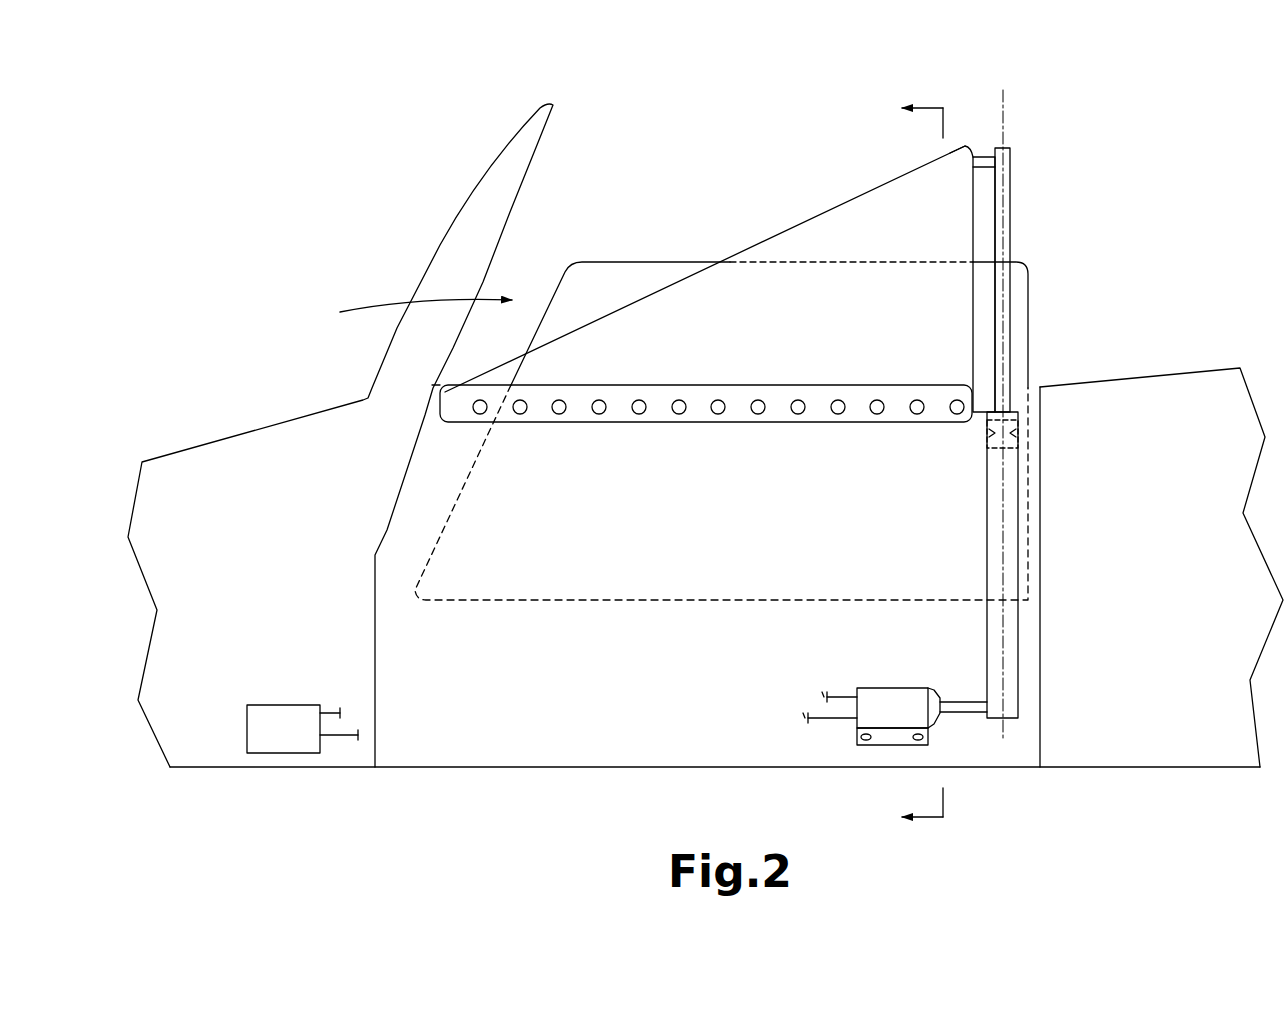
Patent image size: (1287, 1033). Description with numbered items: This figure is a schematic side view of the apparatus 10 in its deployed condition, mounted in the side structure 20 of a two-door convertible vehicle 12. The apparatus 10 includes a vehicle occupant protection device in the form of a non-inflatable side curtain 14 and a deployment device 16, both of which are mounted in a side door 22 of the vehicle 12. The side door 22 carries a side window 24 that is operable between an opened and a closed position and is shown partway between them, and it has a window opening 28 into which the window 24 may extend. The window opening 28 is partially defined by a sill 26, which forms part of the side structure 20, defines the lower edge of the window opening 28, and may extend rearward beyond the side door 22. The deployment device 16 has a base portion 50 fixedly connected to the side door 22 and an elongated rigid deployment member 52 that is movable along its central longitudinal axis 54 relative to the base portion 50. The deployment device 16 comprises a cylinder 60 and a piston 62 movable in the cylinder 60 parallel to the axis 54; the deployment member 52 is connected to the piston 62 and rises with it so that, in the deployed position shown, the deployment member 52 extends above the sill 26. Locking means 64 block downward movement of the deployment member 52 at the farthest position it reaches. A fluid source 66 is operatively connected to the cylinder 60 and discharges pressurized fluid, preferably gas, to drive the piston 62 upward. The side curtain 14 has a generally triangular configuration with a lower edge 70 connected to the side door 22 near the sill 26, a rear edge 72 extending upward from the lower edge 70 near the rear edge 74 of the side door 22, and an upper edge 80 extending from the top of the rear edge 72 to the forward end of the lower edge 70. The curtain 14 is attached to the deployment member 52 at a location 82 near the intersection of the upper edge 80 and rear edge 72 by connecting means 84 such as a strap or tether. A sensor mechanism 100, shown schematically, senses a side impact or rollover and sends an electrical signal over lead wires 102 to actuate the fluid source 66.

The apparatus 10 is at (1122, 170).
The vehicle 12 is at (315, 178).
The side curtain 14 is at (703, 317).
The deployment device 16 is at (1000, 567).
The side structure 20 is at (1072, 702).
The side door 22 is at (503, 748).
The side window 24 is at (618, 280).
The sill 26 is at (756, 385).
The window opening 28 is at (411, 311).
The base portion 50 is at (1020, 677).
The deployment member 52 is at (1012, 303).
The central longitudinal axis 54 is at (1003, 122).
The cylinder 60 is at (993, 643).
The piston 62 is at (1020, 447).
The locking means 64 is at (992, 432).
The fluid source 66 is at (880, 697).
The lower edge 70 is at (693, 422).
The rear edge 72 is at (975, 353).
The rear edge of the side door 74 is at (1040, 500).
The upper edge 80 is at (772, 240).
The location 82 is at (967, 143).
The connecting means 84 is at (987, 162).
The sensor mechanism 100 is at (263, 713).
The lead wires 102 is at (827, 697).